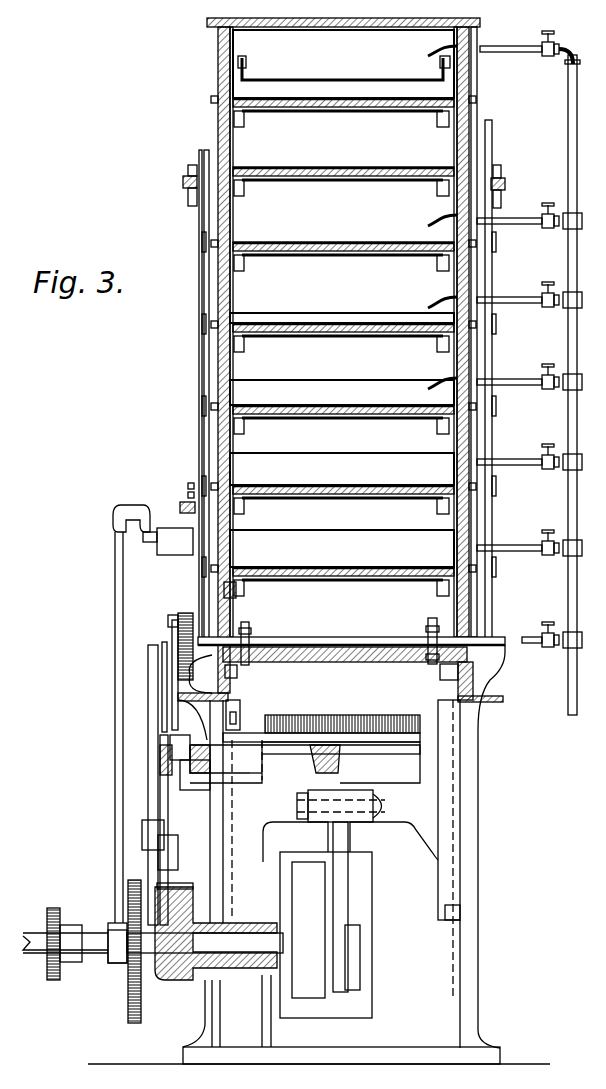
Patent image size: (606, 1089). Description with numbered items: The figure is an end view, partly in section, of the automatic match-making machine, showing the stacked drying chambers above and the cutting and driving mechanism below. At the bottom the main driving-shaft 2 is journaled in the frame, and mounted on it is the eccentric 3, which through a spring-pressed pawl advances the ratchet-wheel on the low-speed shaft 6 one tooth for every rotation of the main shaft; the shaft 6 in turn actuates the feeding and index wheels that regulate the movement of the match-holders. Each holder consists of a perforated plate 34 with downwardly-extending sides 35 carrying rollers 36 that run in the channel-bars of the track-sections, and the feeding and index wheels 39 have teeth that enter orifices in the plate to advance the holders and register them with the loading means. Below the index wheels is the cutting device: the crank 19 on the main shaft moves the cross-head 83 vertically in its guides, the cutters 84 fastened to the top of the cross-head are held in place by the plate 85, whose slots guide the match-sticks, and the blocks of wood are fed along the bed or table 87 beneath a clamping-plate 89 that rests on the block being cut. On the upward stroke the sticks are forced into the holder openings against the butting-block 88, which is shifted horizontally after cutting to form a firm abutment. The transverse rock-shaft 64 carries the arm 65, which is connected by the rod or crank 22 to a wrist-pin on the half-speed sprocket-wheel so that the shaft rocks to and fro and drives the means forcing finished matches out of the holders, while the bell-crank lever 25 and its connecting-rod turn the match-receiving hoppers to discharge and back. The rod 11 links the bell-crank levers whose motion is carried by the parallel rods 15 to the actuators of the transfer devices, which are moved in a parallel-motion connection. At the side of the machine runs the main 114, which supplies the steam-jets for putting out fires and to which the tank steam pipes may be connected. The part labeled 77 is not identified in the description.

The main driving-shaft 2 is at (207, 945).
The eccentric 3 is at (160, 972).
The shaft 6 is at (292, 638).
The rod 11 is at (199, 268).
The parallel rods 15 is at (183, 182).
The crank 19 is at (340, 888).
The crank 22 is at (142, 826).
The bell-crank lever 25 is at (163, 668).
The perforated plate 34 is at (375, 582).
The downwardly-extending sides 35 is at (246, 588).
The rollers 36 is at (224, 588).
The feeding and index wheels 39 is at (430, 620).
The transverse rock-shaft 64 is at (167, 540).
The arm 65 is at (136, 512).
The rail 77 is at (158, 750).
The cross-head 83 is at (356, 806).
The cutters 84 is at (420, 734).
The plate 85 is at (320, 715).
The bed or table 87 is at (305, 764).
The butting-block 88 is at (415, 742).
The clamping-plate 89 is at (240, 708).
The main 114 is at (570, 682).